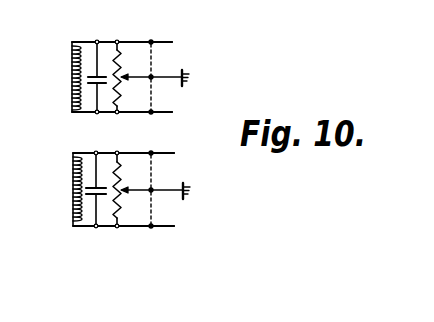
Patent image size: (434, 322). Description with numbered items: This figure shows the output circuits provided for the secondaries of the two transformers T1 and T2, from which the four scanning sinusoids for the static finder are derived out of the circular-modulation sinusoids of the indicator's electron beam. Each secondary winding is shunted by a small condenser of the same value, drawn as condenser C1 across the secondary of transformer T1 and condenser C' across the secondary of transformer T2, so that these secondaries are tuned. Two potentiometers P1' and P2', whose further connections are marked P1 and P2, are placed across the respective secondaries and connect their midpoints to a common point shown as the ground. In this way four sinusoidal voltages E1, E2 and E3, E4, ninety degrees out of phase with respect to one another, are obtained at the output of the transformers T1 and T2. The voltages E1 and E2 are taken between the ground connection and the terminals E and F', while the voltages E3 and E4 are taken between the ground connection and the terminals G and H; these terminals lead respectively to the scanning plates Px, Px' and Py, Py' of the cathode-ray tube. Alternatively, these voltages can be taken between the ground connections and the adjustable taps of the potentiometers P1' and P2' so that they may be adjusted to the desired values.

The transformer T1 is at (71, 81).
The tuning capacitor C1 is at (93, 77).
The potentiometer P1' is at (107, 34).
The potentiometer lower tap P1 is at (107, 119).
The terminal E is at (148, 32).
The terminal F' is at (149, 120).
The sinusoidal voltage E1 is at (159, 61).
The sinusoidal voltage E2 is at (160, 94).
The scanning plate Px is at (175, 44).
The scanning plate Px' is at (177, 114).
The transformer T2 is at (69, 184).
The condenser C' is at (97, 189).
The potentiometer P2' is at (122, 149).
The potentiometer lower tap P2 is at (106, 231).
The terminal G is at (149, 146).
The terminal H is at (149, 234).
The sinusoidal voltage E3 is at (159, 173).
The sinusoidal voltage E4 is at (160, 208).
The scanning plate Py is at (177, 154).
The scanning plate Py' is at (180, 228).